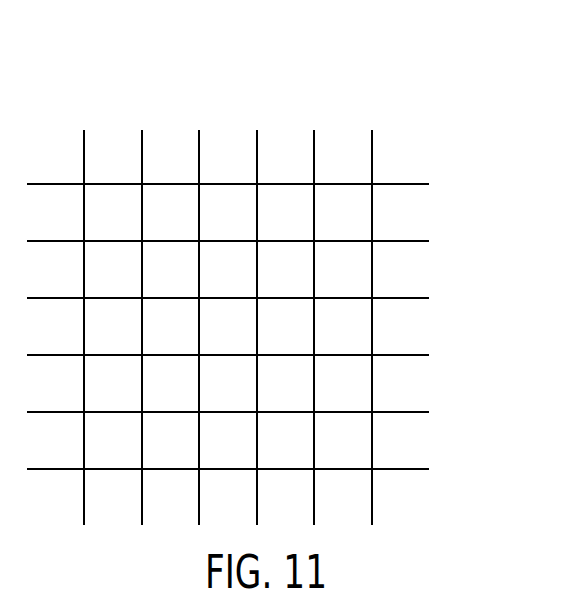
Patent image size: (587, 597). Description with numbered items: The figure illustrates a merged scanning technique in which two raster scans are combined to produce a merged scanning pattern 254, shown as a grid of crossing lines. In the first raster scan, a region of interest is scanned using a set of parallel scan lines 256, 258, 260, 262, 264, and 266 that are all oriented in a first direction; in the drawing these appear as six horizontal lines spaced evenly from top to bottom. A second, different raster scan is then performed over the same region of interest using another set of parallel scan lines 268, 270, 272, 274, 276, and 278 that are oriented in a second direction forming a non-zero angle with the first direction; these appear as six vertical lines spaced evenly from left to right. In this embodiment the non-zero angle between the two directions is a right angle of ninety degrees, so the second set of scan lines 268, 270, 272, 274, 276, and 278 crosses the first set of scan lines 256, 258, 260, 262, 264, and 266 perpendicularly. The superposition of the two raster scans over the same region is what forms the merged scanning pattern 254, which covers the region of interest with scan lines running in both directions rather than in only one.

The merged scanning pattern 254 is at (447, 60).
The parallel scan line 256 is at (437, 186).
The parallel scan line 258 is at (437, 240).
The parallel scan line 260 is at (437, 298).
The parallel scan line 262 is at (437, 354).
The parallel scan line 264 is at (437, 414).
The parallel scan line 266 is at (437, 468).
The parallel scan line 268 is at (84, 122).
The parallel scan line 270 is at (141, 122).
The parallel scan line 272 is at (199, 122).
The parallel scan line 274 is at (257, 122).
The parallel scan line 276 is at (313, 122).
The parallel scan line 278 is at (371, 122).